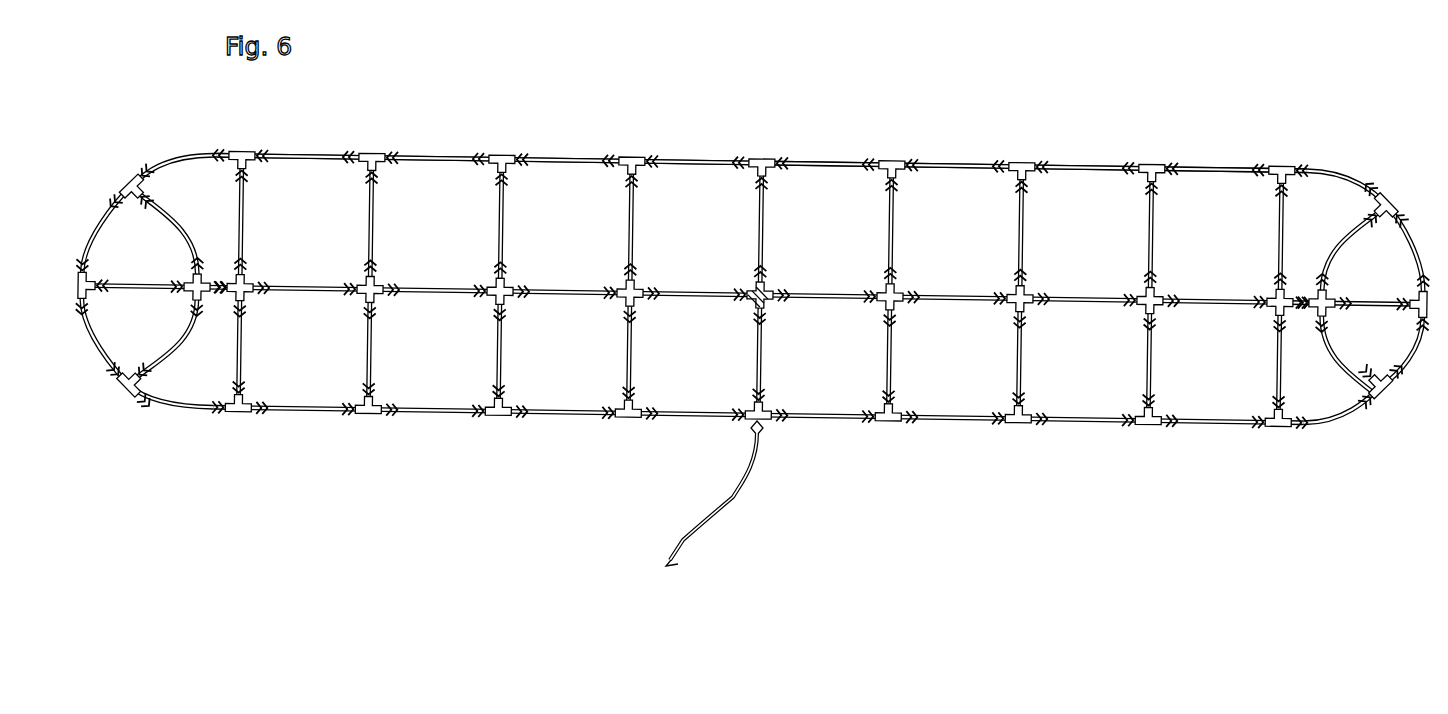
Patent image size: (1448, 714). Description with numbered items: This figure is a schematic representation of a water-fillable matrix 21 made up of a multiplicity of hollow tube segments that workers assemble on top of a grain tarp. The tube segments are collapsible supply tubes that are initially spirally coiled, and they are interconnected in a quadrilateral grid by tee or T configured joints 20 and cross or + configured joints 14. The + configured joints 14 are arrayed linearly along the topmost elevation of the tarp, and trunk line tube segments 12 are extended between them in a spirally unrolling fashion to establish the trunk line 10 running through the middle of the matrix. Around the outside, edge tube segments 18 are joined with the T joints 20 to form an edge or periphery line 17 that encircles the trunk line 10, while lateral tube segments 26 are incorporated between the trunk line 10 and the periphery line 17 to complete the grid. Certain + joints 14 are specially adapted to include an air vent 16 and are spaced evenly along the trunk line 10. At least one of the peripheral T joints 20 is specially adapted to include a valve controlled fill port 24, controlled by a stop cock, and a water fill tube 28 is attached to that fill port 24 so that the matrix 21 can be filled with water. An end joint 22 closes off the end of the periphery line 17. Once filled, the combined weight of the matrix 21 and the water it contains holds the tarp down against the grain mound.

The trunk line 10 is at (677, 288).
The trunk line tube segment 12 is at (300, 289).
The + configured joint 14 is at (377, 279).
The air vent 16 is at (767, 290).
The edge or periphery line 17 is at (948, 422).
The edge tube segment 18 is at (427, 158).
The T configured joint 20 is at (1020, 160).
The matrix 21 is at (802, 137).
The end tee connector 22 is at (1327, 297).
The valve controlled fill port 24 is at (760, 430).
The lateral tube segment 26 is at (502, 357).
The fill tube 28 is at (712, 512).